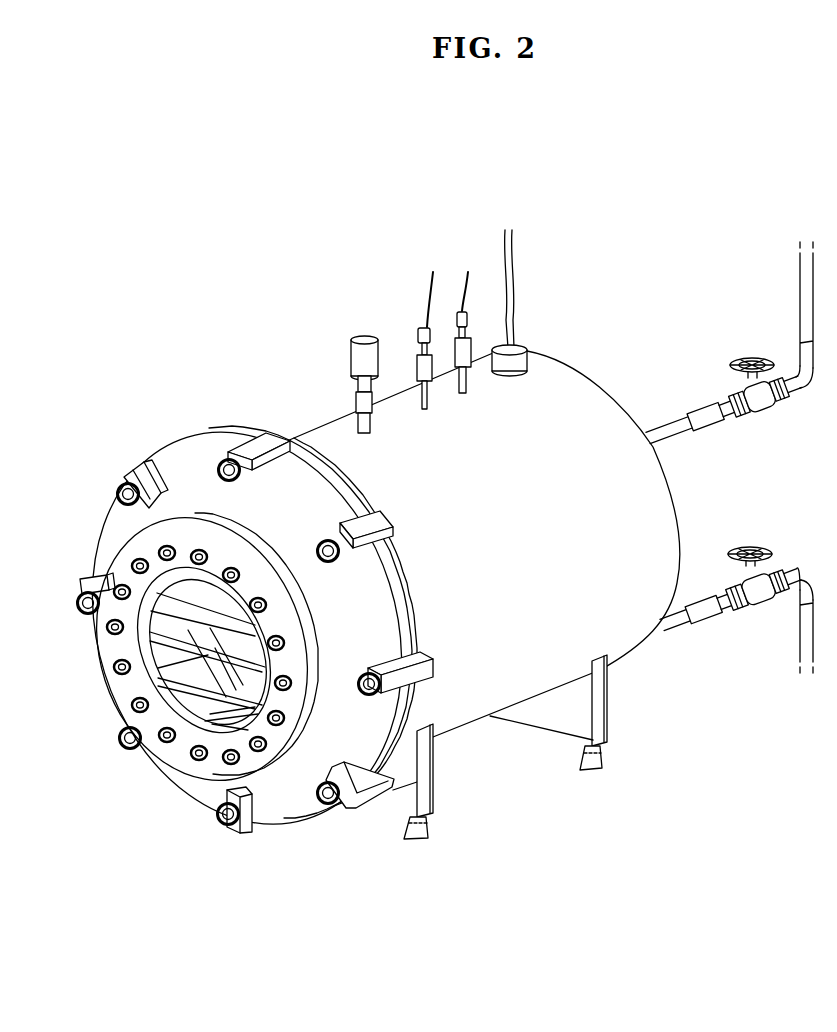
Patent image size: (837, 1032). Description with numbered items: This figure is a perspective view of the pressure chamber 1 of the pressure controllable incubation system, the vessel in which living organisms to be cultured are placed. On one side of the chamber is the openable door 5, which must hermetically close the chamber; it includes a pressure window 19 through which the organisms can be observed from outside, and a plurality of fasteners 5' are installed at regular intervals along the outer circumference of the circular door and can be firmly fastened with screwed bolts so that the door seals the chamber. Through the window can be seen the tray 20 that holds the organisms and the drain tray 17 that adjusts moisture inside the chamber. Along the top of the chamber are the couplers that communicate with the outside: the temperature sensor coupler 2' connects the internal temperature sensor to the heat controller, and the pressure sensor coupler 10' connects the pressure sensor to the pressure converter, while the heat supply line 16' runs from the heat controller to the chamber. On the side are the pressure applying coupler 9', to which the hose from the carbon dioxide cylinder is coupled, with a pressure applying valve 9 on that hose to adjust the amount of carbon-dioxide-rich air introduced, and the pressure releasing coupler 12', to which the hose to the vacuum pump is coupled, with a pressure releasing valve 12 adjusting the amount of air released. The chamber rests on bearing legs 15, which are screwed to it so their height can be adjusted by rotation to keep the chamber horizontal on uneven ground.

The pressure chamber 1 is at (158, 370).
The temperature sensor coupler 2' is at (419, 333).
The door 5 is at (246, 628).
The fasteners 5' is at (256, 580).
The pressure applying valve 9 is at (770, 330).
The pressure applying coupler 9' is at (724, 380).
The pressure sensor coupler 10' is at (320, 380).
The pressure releasing valve 12 is at (780, 571).
The pressure releasing coupler 12' is at (730, 560).
The bearing legs 15 is at (598, 757).
The heat supply line 16' is at (476, 296).
The drain tray 17 is at (203, 725).
The pressure window 19 is at (185, 585).
The tray 20 is at (165, 643).